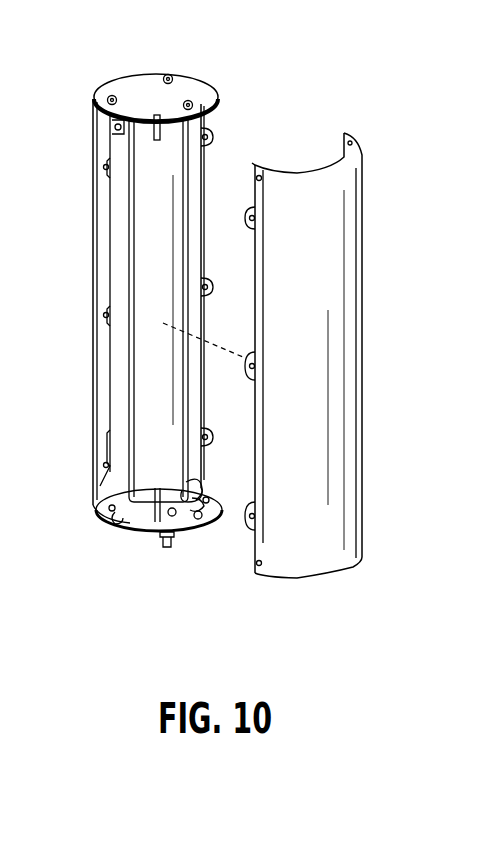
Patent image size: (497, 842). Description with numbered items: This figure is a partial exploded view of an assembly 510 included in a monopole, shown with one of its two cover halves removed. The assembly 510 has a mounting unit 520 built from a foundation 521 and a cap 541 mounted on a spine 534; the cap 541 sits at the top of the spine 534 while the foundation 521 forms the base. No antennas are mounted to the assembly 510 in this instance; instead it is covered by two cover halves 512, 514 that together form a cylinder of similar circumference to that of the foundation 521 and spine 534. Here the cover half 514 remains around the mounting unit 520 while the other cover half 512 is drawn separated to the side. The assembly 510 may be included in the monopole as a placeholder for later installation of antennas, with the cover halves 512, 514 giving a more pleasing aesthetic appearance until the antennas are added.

The assembly 510 is at (272, 612).
The cover half 512 is at (350, 228).
The cover half 514 is at (105, 210).
The mounting unit 520 is at (144, 536).
The foundation 521 is at (197, 530).
The spine 534 is at (150, 281).
The cap 541 is at (205, 100).